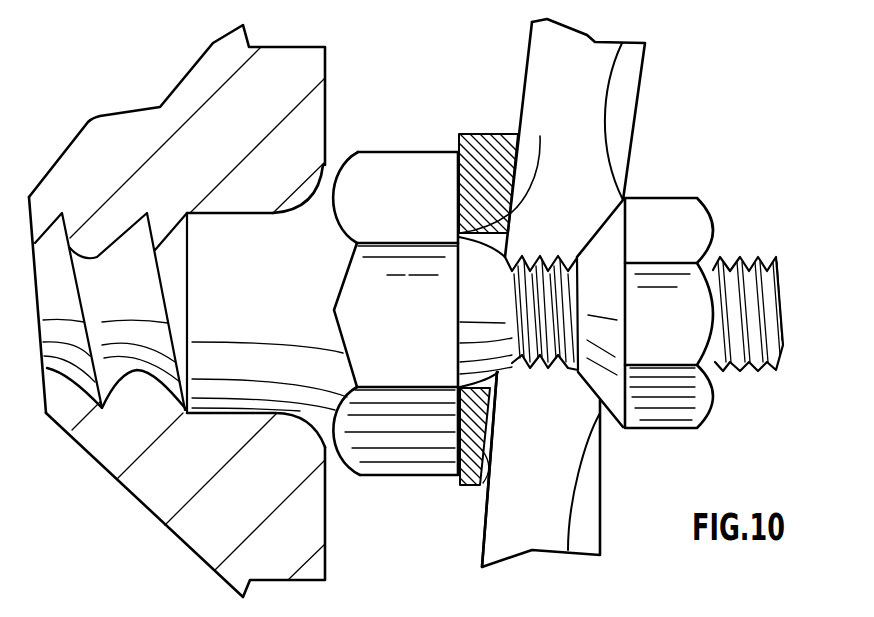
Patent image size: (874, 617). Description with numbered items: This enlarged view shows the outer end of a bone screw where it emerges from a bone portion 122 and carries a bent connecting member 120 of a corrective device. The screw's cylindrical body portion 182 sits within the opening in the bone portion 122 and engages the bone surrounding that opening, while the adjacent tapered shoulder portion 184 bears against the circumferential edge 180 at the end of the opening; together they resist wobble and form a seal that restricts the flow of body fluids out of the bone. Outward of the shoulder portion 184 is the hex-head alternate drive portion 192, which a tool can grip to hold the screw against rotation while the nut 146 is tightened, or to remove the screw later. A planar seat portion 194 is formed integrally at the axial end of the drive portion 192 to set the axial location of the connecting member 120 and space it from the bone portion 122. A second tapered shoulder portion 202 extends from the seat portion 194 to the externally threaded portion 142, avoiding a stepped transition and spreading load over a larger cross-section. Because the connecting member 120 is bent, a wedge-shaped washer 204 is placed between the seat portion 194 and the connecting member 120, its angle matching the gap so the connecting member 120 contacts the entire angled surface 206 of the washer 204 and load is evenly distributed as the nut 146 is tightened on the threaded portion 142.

The bone portion 122 is at (182, 479).
The cylindrical body portion 182 is at (225, 208).
The shoulder portion 184 is at (316, 180).
The alternate drive portion 192 is at (397, 148).
The circumferential edge 180 is at (331, 440).
The washer 204 is at (473, 170).
The angled surface 206 is at (483, 483).
The connecting member 120 is at (553, 428).
The seat portion 194 is at (515, 168).
The shoulder portion 202 is at (497, 372).
The nut 146 is at (650, 340).
The threaded portion 142 is at (760, 245).